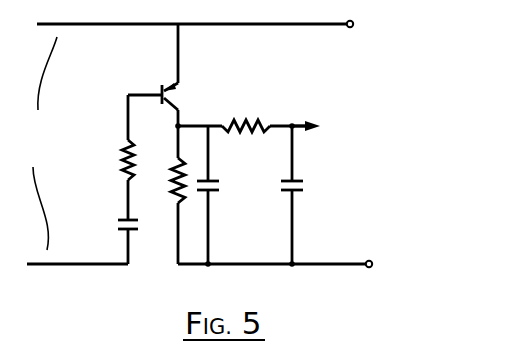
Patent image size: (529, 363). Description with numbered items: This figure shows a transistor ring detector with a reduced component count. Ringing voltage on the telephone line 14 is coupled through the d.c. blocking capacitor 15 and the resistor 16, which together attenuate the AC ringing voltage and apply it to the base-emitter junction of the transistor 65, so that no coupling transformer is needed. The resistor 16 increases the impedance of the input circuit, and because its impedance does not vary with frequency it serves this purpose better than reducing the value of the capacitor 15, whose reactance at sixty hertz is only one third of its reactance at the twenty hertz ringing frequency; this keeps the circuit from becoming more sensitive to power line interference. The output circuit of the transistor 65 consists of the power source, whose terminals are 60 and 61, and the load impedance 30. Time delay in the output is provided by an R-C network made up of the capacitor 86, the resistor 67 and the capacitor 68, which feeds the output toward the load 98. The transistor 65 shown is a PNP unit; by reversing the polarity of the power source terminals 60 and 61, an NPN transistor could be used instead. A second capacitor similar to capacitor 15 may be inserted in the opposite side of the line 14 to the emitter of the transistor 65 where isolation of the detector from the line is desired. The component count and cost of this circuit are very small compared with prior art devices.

The telephone line 14 is at (36, 143).
The d.c. blocking capacitor 15 is at (108, 222).
The resistor 16 is at (113, 158).
The load impedance 30 is at (167, 196).
The power source terminal 60 is at (349, 34).
The power source terminal 61 is at (360, 259).
The transistor 65 is at (155, 88).
The resistor of R-C network 67 is at (245, 113).
The capacitor of R-C network 68 is at (302, 163).
The capacitor of R-C network 86 is at (202, 157).
The load 98 is at (313, 118).